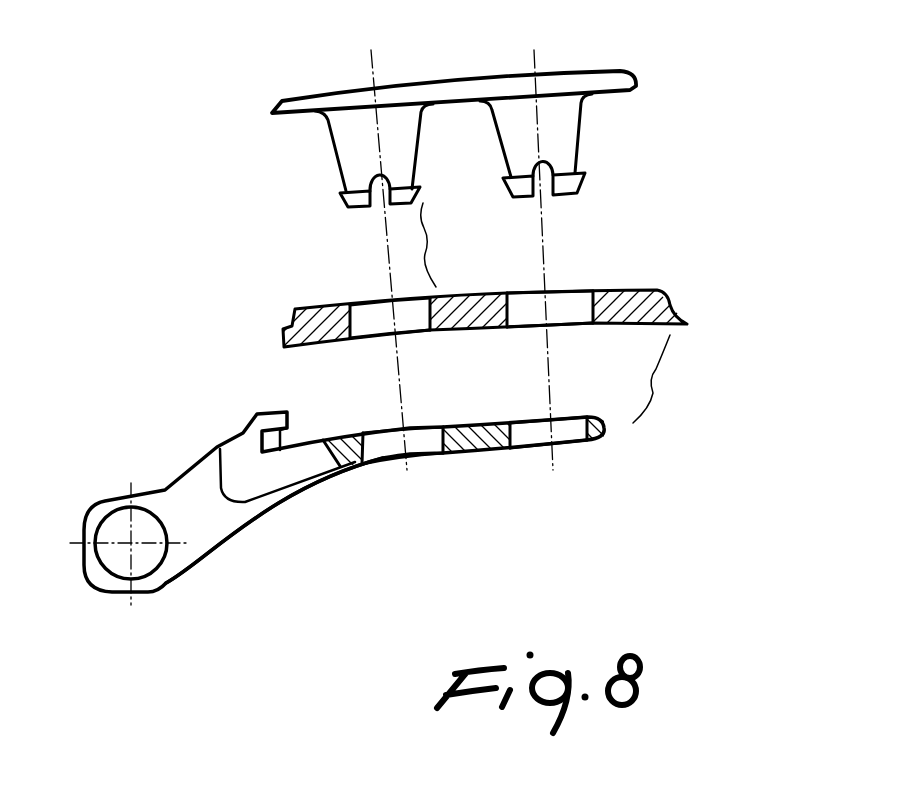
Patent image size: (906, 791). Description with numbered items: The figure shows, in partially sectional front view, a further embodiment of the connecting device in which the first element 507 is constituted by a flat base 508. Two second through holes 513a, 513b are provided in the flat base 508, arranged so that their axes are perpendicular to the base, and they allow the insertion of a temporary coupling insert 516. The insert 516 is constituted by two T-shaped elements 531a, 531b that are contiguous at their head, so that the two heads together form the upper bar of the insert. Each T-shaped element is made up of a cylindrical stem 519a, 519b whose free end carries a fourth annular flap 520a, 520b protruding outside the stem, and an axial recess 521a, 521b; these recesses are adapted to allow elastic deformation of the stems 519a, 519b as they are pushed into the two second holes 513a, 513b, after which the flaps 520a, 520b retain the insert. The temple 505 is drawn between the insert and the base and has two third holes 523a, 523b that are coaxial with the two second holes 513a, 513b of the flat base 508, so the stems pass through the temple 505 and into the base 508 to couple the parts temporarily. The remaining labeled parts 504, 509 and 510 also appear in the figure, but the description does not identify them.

The intermediate plate 504 is at (268, 321).
The temple 505 is at (653, 308).
The first element 507 is at (112, 262).
The flat base 508 is at (290, 490).
The lever arm 509 is at (119, 478).
The pivot bore 510 is at (120, 560).
The second through hole 513a is at (387, 448).
The second through hole 513b is at (537, 445).
The temporary coupling insert 516 is at (475, 68).
The cylindrical stem 519a is at (394, 152).
The cylindrical stem 519b is at (586, 113).
The fourth annular flap 520a is at (344, 195).
The fourth annular flap 520b is at (585, 183).
The axial recess 521a is at (369, 214).
The axial recess 521b is at (556, 201).
The third hole 523a is at (370, 331).
The third hole 523b is at (533, 320).
The T-shaped element 531a is at (294, 143).
The T-shaped element 531b is at (612, 150).